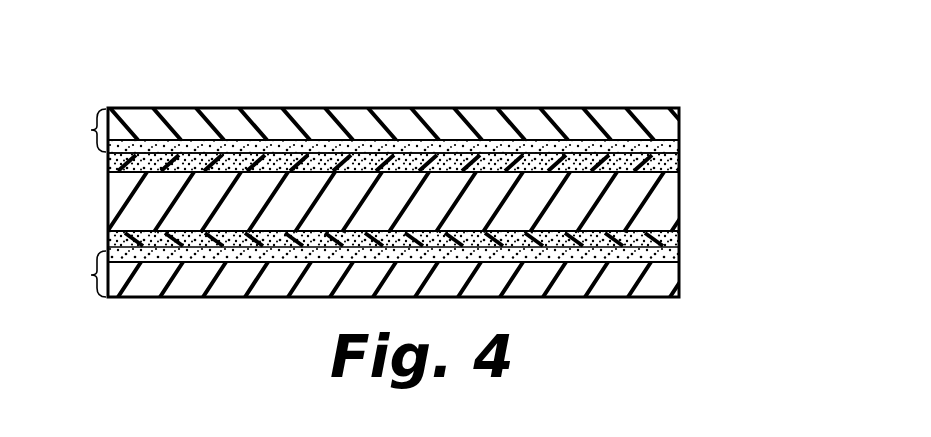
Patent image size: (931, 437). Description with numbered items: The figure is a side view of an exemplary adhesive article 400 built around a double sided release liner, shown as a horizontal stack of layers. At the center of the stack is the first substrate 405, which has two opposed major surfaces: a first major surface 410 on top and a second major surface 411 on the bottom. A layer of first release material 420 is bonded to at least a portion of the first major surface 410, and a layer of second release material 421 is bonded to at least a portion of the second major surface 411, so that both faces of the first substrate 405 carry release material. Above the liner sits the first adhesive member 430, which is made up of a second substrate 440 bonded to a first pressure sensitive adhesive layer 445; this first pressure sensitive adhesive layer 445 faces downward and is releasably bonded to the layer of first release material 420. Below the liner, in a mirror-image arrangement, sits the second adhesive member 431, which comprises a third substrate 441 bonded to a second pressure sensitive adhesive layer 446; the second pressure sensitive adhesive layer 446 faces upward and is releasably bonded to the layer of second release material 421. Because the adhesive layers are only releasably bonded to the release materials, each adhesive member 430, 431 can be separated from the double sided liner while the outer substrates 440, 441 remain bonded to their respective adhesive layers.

The adhesive article 400 is at (222, 62).
The first substrate 405 is at (680, 202).
The first major surface 410 is at (108, 163).
The second major surface 411 is at (108, 238).
The layer of first release material 420 is at (680, 165).
The layer of second release material 421 is at (680, 238).
The first adhesive member 430 is at (67, 130).
The second adhesive member 431 is at (67, 274).
The second substrate 440 is at (680, 120).
The third substrate 441 is at (680, 285).
The first pressure sensitive adhesive layer 445 is at (680, 145).
The second pressure sensitive adhesive layer 446 is at (680, 255).